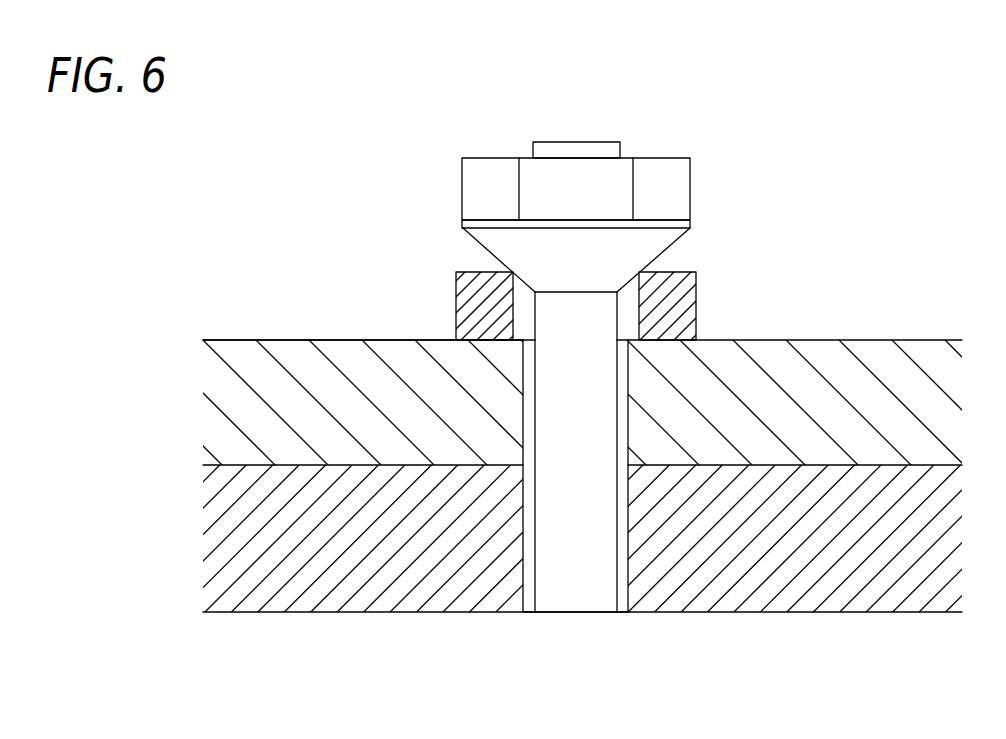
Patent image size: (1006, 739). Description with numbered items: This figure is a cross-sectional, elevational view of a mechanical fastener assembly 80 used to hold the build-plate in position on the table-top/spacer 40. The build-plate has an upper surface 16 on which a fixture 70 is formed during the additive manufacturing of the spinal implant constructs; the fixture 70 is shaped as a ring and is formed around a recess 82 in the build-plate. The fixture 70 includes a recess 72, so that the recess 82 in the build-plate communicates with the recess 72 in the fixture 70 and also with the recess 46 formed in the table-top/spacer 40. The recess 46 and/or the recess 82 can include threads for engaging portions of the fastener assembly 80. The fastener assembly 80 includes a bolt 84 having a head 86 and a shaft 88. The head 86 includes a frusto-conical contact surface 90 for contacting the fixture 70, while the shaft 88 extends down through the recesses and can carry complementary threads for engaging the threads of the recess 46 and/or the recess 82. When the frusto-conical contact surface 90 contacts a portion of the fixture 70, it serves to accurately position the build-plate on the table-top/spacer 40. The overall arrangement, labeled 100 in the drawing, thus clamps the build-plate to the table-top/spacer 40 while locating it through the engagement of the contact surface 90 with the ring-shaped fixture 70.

The upper surface 16 is at (337, 340).
The table-top/spacer 40 is at (352, 565).
The recess 46 is at (522, 558).
The fixture 70 is at (690, 297).
The recess 72 is at (641, 303).
The mechanical fastener assembly 80 is at (667, 141).
The recess 82 is at (522, 435).
The bolt 84 is at (521, 142).
The head 86 is at (486, 177).
The shaft 88 is at (588, 577).
The frusto-conical contact surface 90 is at (493, 257).
The fastener assembly 100 is at (246, 397).